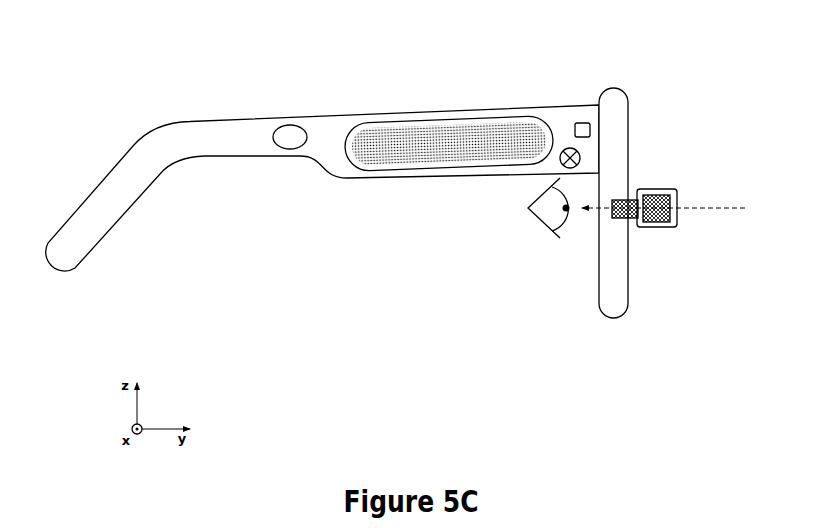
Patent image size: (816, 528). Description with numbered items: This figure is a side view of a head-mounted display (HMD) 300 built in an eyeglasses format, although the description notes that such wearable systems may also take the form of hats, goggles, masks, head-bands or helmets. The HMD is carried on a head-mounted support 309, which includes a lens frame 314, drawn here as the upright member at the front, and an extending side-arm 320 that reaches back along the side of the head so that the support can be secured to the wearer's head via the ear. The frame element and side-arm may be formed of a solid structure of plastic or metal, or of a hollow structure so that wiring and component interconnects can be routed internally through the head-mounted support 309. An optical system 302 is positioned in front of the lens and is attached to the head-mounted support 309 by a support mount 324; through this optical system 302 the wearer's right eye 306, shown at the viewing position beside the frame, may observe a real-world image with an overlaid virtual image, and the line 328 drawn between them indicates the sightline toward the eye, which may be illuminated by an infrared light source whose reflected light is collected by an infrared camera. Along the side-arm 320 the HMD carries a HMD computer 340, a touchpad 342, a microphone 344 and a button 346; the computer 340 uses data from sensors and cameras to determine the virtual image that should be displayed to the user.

The head-mounted display 300 is at (380, 330).
The optical system 302 is at (680, 218).
The right eye 306 is at (552, 234).
The head-mounted support 309 is at (646, 78).
The lens frame 314 is at (608, 318).
The extending side-arm 320 is at (163, 175).
The support mount 324 is at (628, 220).
The optical axis 328 is at (738, 207).
The HMD computer 340 is at (293, 122).
The touchpad 342 is at (438, 118).
The microphone 344 is at (567, 150).
The button 346 is at (587, 121).